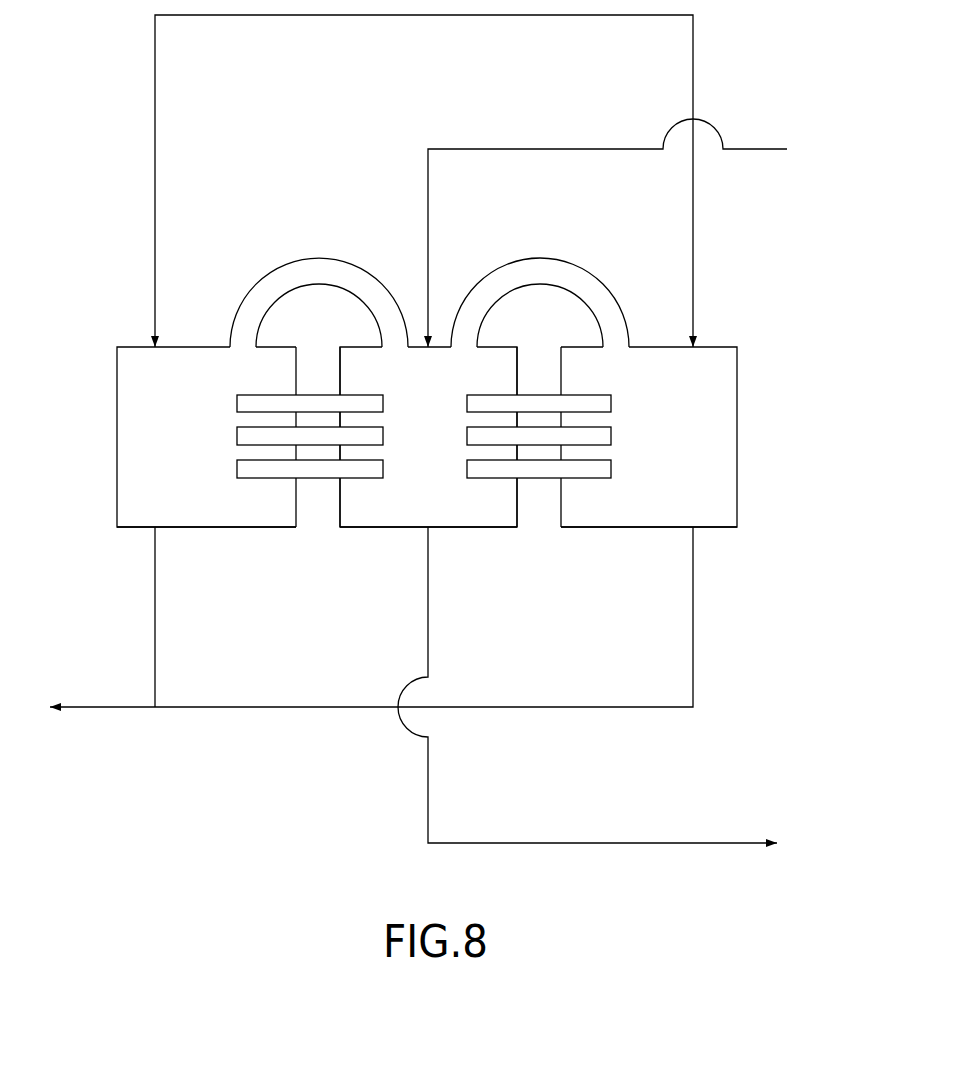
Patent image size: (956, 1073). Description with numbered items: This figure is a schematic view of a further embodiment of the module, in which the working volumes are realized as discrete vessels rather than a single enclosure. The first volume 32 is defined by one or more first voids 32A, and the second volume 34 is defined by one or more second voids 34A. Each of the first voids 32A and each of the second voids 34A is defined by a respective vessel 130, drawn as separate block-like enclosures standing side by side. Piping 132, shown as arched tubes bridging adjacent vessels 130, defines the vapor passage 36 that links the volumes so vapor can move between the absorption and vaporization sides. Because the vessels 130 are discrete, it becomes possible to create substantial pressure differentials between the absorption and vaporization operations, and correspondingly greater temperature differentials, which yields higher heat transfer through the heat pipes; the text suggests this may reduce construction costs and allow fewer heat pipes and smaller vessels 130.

The vapor passage 36 is at (480, 192).
The vessel 130 is at (117, 367).
The piping 132 is at (308, 267).
The second volume 34 is at (145, 507).
The first volume 32 is at (461, 508).
The second void 34A is at (427, 501).
The first void 32A is at (428, 501).